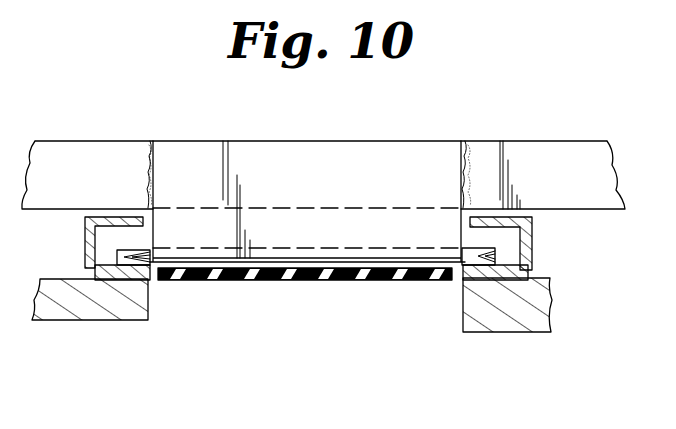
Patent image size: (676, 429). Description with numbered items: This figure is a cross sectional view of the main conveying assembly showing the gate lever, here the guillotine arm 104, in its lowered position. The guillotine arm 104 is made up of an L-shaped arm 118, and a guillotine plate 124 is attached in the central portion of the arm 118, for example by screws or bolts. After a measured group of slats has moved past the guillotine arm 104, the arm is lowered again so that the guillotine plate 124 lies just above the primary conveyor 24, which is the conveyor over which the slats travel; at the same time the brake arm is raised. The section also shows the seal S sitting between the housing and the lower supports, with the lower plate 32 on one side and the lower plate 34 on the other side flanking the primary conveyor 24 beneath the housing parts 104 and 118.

The guillotine arm 104 is at (185, 141).
The L-shaped arm 118 is at (547, 152).
The guillotine plate 124 is at (300, 193).
The primary conveyor 24 is at (285, 281).
The seal S is at (489, 249).
The lower plate 32 is at (110, 277).
The lower plate 34 is at (508, 276).